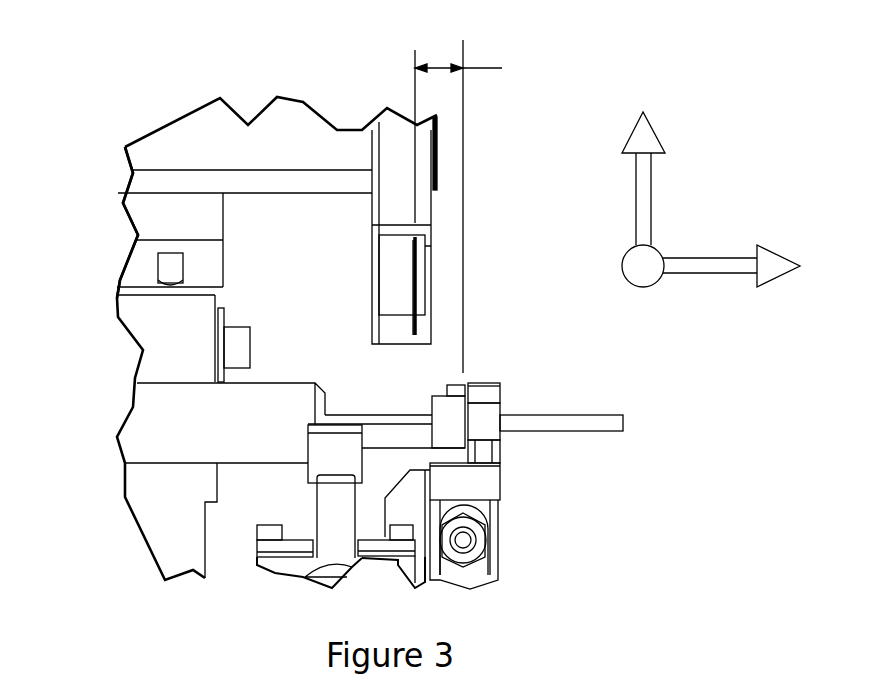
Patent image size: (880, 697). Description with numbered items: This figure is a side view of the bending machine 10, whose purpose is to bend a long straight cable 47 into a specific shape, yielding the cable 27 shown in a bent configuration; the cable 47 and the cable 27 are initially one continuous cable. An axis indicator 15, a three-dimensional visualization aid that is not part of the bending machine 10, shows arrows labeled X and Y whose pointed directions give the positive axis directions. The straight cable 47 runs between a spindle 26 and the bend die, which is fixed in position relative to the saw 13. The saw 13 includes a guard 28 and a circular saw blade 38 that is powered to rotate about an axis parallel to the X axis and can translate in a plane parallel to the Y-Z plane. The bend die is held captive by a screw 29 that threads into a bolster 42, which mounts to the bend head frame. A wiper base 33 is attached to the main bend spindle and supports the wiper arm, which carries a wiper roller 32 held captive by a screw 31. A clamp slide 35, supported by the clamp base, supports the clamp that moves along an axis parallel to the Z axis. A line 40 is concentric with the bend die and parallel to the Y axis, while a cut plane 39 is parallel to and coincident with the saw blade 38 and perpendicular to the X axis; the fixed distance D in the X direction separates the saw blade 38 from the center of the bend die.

The bending machine 10 is at (597, 510).
The saw 13 is at (270, 192).
The axis indicator 15 is at (652, 210).
The spindle 26 is at (301, 382).
The cable 27 is at (623, 413).
The guard 28 is at (432, 217).
The screw 29 is at (448, 387).
The screw 31 is at (500, 385).
The wiper roller 32 is at (502, 408).
The wiper base 33 is at (498, 487).
The clamp slide 35 is at (308, 445).
The saw blade 38 is at (413, 262).
The cut plane 39 is at (415, 93).
The line 40 is at (463, 59).
The bolster 42 is at (400, 487).
The cable 47 is at (358, 413).